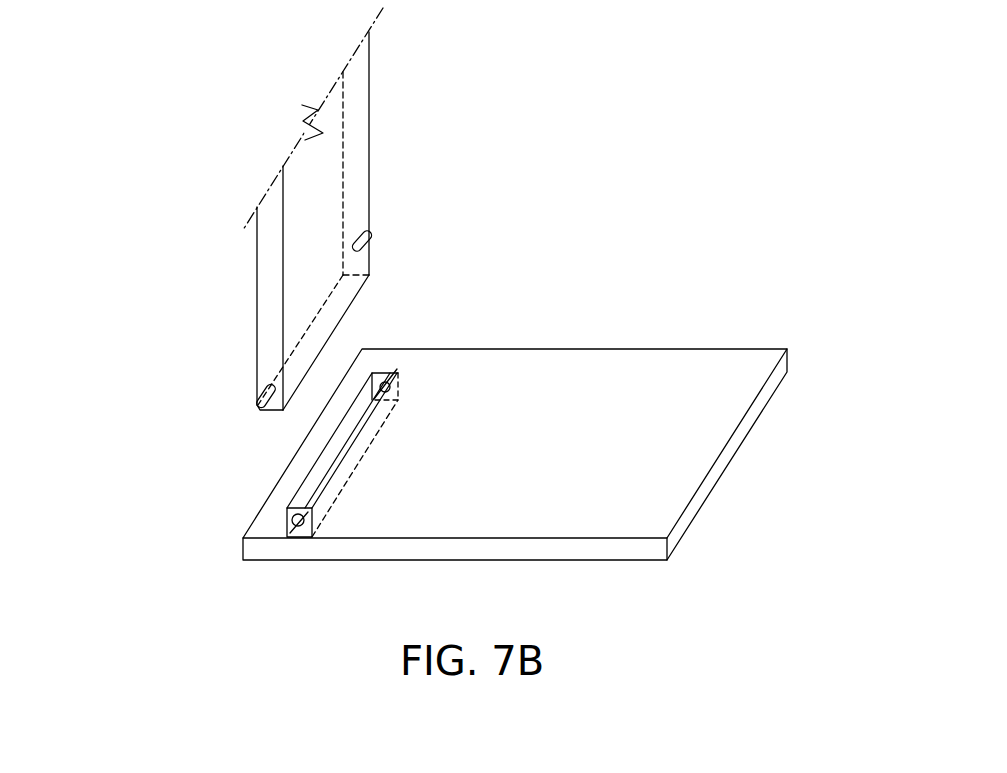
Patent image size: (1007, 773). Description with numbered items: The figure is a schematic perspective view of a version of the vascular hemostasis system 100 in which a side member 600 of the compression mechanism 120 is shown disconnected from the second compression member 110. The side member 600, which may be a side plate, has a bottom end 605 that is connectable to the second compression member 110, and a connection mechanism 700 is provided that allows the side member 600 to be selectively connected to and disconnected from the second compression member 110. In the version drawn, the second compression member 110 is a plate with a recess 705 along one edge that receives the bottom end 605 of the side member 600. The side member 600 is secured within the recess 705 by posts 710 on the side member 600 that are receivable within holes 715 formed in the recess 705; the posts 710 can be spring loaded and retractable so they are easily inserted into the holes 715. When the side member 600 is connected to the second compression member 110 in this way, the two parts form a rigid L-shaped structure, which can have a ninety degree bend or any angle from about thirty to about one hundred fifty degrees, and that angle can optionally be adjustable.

The vascular hemostasis system 100 is at (686, 86).
The second compression member 110 is at (652, 362).
The compression mechanism 120 is at (421, 149).
The side member 600 is at (333, 118).
The bottom end 605 is at (407, 270).
The connection mechanism 700 is at (197, 360).
The recess 705 is at (300, 480).
The post 710 is at (371, 230).
The hole 715 is at (398, 366).